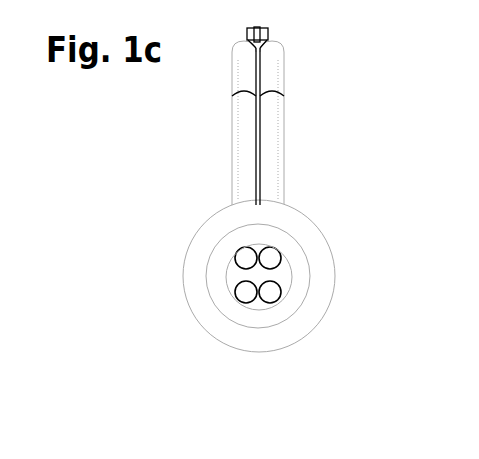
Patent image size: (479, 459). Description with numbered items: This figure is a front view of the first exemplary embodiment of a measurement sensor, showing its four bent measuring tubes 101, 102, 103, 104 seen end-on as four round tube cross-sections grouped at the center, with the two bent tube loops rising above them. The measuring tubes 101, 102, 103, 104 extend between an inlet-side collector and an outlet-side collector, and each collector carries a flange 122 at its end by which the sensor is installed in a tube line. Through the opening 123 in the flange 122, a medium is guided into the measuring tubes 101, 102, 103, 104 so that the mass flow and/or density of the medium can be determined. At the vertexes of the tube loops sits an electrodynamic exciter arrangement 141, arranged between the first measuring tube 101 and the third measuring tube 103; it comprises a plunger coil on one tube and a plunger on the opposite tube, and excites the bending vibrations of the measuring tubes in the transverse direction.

The first measuring tube 101 is at (243, 135).
The second measuring tube 102 is at (270, 289).
The third measuring tube 103 is at (268, 159).
The fourth measuring tube 104 is at (246, 289).
The flange 122 is at (287, 212).
The opening 123 is at (285, 274).
The electrodynamic exciter arrangement 141 is at (265, 29).